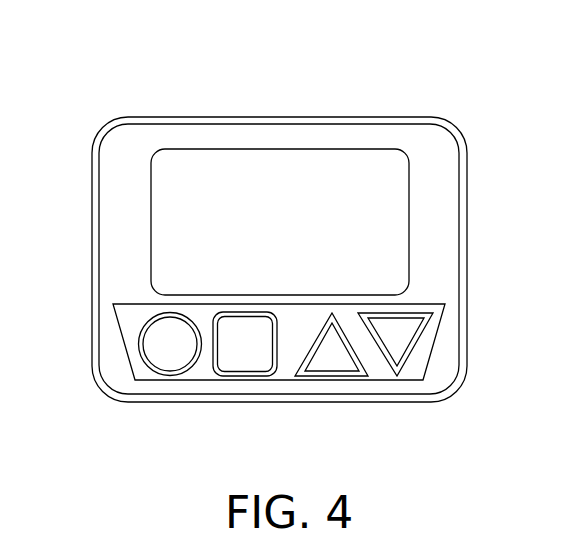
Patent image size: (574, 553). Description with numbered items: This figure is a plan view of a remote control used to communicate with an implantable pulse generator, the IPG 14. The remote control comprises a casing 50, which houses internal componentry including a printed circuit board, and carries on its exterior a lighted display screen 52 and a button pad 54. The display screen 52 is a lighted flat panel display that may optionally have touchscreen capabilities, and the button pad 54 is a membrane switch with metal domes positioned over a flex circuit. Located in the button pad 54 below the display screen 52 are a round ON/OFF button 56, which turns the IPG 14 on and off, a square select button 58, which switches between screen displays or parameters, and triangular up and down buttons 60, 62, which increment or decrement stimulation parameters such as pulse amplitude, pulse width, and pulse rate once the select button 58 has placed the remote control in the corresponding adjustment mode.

The IPG 14 is at (452, 126).
The casing 50 is at (443, 210).
The display screen 52 is at (297, 165).
The button pad 54 is at (130, 325).
The ON/OFF button 56 is at (172, 357).
The select button 58 is at (255, 357).
The up button 60 is at (340, 358).
The down button 62 is at (398, 347).